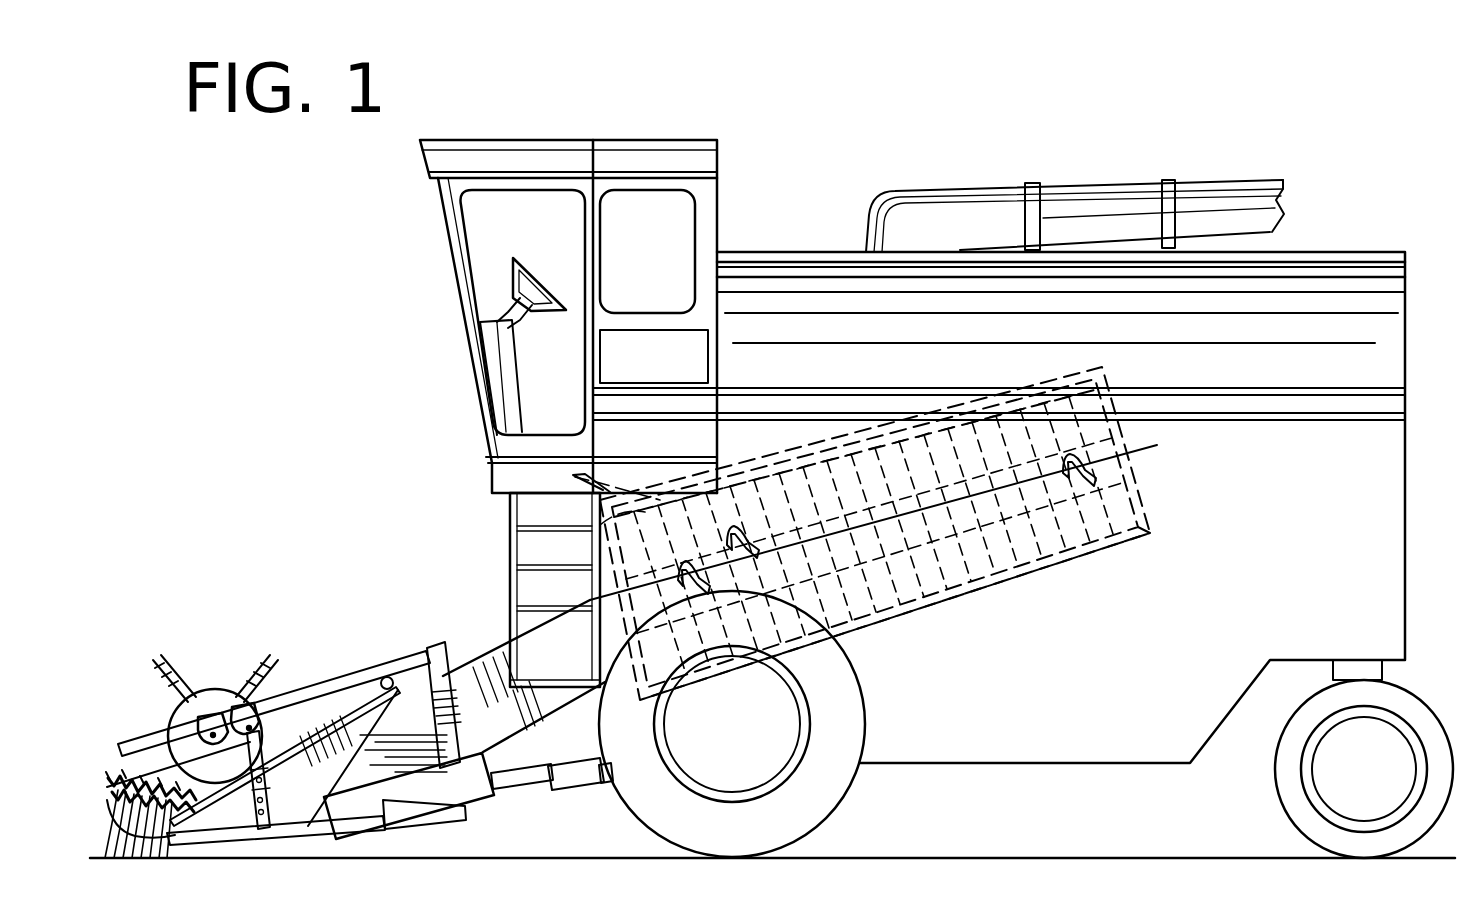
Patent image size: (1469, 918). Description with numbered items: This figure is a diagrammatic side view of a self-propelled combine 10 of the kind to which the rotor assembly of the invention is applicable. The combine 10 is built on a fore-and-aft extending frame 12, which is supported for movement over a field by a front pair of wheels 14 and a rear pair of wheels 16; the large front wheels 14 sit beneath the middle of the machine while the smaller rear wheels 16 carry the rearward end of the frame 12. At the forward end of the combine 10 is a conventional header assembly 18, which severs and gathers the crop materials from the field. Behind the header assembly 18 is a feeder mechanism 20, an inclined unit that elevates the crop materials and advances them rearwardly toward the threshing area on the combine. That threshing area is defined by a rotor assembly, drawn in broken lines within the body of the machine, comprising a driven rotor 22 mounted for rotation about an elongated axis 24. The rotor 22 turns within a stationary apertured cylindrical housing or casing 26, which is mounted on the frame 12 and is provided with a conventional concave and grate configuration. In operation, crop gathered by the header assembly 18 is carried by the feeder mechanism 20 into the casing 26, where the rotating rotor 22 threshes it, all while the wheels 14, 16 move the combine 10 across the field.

The self-propelled combine 10 is at (452, 461).
The frame 12 is at (978, 730).
The front pair of wheels 14 is at (817, 807).
The rear pair of wheels 16 is at (1297, 802).
The header assembly 18 is at (215, 680).
The feeder mechanism 20 is at (478, 652).
The rotor 22 is at (1063, 543).
The elongated axis 24 is at (1134, 448).
The cylindrical housing or casing 26 is at (1134, 542).